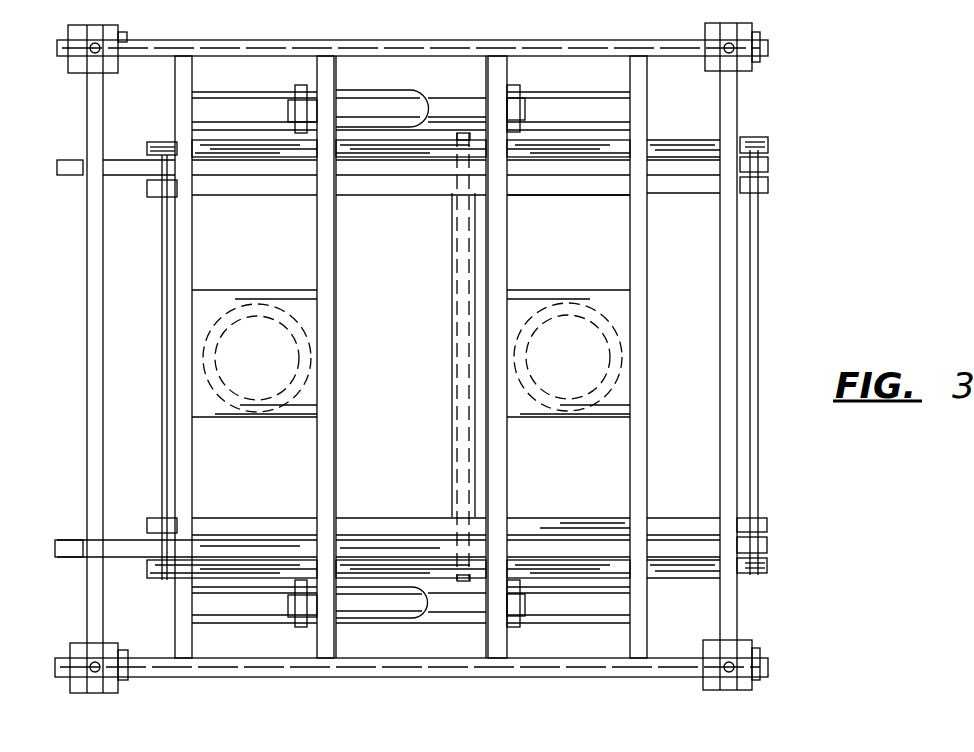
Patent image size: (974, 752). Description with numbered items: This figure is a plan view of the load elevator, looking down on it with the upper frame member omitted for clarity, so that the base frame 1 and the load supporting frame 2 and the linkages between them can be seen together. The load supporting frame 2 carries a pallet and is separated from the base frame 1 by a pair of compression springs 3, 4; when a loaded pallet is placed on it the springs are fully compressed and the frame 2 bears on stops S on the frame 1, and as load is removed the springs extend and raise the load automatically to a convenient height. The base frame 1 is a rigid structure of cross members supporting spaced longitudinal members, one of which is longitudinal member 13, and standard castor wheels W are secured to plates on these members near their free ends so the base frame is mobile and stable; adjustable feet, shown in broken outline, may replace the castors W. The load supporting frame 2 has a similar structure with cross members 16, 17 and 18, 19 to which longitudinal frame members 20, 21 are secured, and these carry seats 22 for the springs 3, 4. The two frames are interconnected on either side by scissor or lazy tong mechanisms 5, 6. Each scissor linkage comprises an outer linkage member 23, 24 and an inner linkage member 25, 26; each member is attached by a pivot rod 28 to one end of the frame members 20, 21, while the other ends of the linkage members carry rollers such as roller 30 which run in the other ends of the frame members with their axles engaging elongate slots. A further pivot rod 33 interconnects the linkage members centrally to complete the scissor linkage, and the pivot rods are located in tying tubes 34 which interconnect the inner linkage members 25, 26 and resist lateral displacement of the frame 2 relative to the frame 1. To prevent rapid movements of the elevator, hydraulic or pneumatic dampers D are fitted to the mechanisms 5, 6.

The base frame 1 is at (660, 313).
The load supporting frame 2 is at (156, 254).
The compression spring 3 is at (207, 359).
The compression spring 4 is at (620, 361).
The scissor mechanism 5 is at (411, 357).
The scissor mechanism 6 is at (527, 202).
The longitudinal member 13 is at (676, 56).
The cross member 16 is at (190, 474).
The cross member 17 is at (331, 474).
The cross member 18 is at (509, 474).
The cross member 19 is at (648, 474).
The longitudinal frame member 20 is at (418, 547).
The longitudinal frame member 21 is at (428, 170).
The seat 22 is at (266, 292).
The outer linkage member 23 is at (267, 570).
The outer linkage member 24 is at (266, 152).
The inner linkage member 25 is at (605, 528).
The inner linkage member 26 is at (598, 183).
The pivot rod 28 is at (746, 136).
The roller 30 is at (168, 143).
The pivot rod 33 is at (424, 357).
The tying tube 34 is at (453, 350).
The damper D is at (368, 105).
The stop S is at (173, 198).
The castor wheel W is at (127, 58).